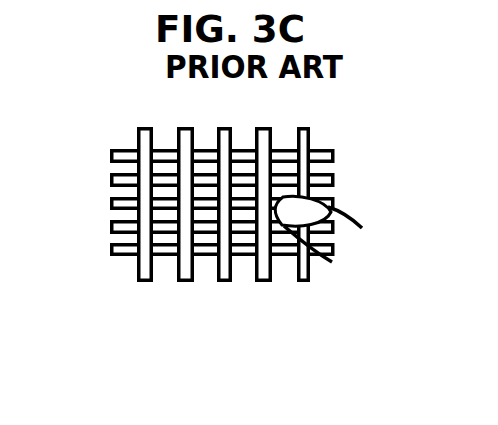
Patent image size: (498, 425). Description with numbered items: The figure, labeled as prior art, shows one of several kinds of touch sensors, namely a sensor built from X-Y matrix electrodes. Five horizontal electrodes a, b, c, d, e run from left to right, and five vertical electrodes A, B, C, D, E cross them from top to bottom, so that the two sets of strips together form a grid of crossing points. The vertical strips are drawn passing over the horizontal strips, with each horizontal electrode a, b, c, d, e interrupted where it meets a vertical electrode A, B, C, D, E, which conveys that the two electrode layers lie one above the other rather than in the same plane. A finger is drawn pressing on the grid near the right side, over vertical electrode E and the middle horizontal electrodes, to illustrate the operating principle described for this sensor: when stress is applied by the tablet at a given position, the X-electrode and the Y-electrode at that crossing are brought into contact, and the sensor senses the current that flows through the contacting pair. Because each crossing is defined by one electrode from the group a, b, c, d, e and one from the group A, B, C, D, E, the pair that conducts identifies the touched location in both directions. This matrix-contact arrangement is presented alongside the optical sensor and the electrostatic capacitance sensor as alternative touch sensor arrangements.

The Y-electrode a is at (110, 153).
The Y-electrode b is at (110, 181).
The Y-electrode c is at (110, 204).
The Y-electrode d is at (110, 227).
The Y-electrode e is at (110, 250).
The X-electrode A is at (141, 282).
The X-electrode B is at (181, 282).
The X-electrode C is at (224, 282).
The X-electrode D is at (259, 282).
The X-electrode E is at (301, 282).